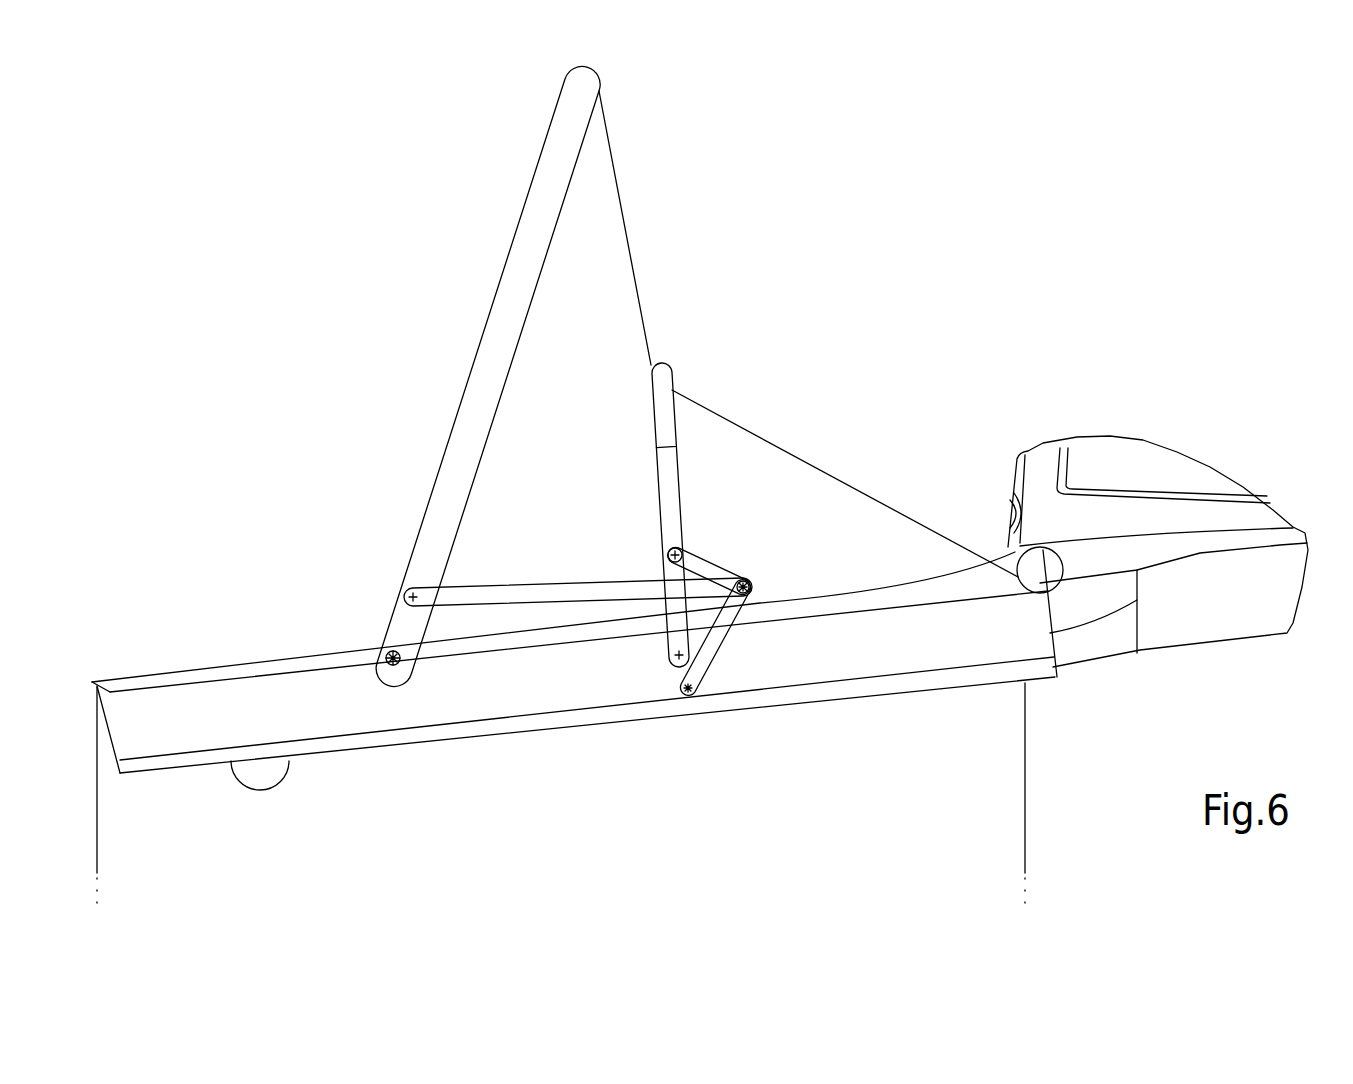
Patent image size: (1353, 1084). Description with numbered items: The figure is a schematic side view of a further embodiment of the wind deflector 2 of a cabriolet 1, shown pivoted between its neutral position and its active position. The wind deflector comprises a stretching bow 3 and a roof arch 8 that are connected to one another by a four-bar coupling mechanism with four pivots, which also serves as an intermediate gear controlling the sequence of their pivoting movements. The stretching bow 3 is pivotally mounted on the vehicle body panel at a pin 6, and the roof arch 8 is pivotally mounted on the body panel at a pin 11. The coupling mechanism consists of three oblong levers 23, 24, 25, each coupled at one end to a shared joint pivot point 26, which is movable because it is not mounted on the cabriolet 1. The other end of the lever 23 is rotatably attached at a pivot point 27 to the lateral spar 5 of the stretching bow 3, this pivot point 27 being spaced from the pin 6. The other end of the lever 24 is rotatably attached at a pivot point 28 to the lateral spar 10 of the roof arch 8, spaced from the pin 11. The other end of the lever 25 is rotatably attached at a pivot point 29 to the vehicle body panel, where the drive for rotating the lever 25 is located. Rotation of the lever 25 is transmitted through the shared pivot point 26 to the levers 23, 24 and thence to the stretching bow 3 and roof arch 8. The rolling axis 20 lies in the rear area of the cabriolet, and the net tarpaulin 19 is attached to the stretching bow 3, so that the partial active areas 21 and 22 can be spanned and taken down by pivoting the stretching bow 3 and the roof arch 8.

The cabriolet 1 is at (300, 430).
The wind deflector 2 is at (1046, 431).
The stretching bow 3 is at (697, 376).
The lateral spar 5 is at (502, 313).
The pin 6 is at (387, 670).
The roof arch 8 is at (650, 453).
The lateral spar 10 is at (668, 383).
The pin 11 is at (667, 653).
The net tarpaulin 19 is at (845, 482).
The rolling axis 20 is at (1053, 563).
The partial active area 21 is at (632, 250).
The partial active area 22 is at (848, 478).
The lever 23 is at (542, 597).
The lever 24 is at (708, 553).
The lever 25 is at (733, 638).
The joint pivot point 26 is at (752, 582).
The pivot point 27 is at (403, 590).
The pivot point 28 is at (663, 552).
The pivot point 29 is at (688, 697).